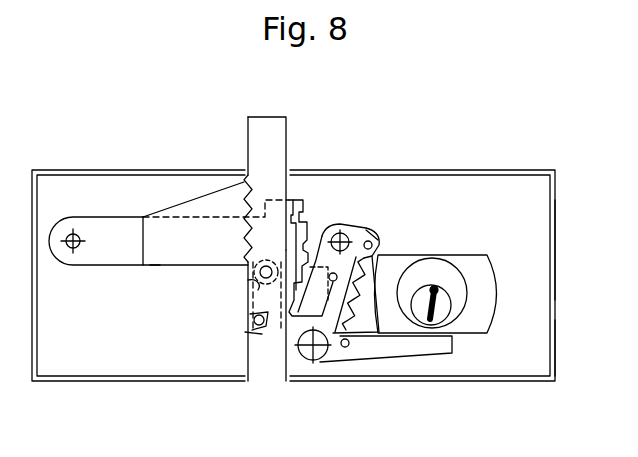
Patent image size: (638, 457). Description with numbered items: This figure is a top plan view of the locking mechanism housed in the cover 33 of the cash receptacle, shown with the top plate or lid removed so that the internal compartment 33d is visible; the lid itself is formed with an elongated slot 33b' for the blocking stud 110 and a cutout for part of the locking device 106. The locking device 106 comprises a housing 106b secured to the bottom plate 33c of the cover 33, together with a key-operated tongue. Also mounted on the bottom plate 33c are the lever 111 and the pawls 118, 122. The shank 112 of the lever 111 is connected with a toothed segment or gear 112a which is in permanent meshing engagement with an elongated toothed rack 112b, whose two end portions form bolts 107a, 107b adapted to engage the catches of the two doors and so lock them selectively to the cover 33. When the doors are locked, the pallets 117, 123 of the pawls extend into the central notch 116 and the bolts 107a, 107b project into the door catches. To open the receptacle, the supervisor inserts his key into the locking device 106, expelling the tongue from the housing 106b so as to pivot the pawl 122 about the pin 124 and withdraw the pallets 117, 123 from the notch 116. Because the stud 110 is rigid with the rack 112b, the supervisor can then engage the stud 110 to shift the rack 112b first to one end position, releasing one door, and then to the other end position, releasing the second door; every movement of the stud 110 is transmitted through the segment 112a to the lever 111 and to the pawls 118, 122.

The cover 33 is at (140, 387).
The elongated slot 33b' is at (230, 344).
The bottom plate 33c is at (540, 347).
The internal compartment 33d is at (552, 245).
The locking device 106 is at (437, 266).
The housing 106b is at (490, 292).
The bolt 107a is at (258, 117).
The bolt 107b is at (273, 381).
The blocking stud 110 is at (249, 280).
The lever 111 is at (152, 272).
The shank 112 is at (102, 222).
The toothed segment 112a is at (192, 205).
The toothed rack 112b is at (277, 152).
The central notch 116 is at (291, 267).
The pallet 117 is at (250, 314).
The pawl 118 is at (366, 229).
The pawl 122 is at (428, 358).
The pallet 123 is at (312, 248).
The pin 124 is at (318, 360).